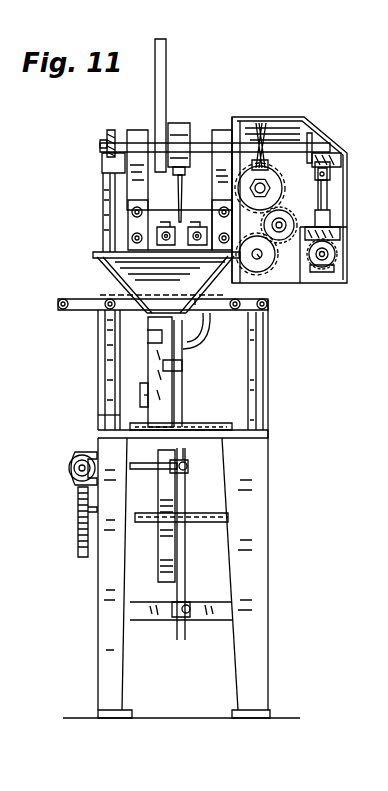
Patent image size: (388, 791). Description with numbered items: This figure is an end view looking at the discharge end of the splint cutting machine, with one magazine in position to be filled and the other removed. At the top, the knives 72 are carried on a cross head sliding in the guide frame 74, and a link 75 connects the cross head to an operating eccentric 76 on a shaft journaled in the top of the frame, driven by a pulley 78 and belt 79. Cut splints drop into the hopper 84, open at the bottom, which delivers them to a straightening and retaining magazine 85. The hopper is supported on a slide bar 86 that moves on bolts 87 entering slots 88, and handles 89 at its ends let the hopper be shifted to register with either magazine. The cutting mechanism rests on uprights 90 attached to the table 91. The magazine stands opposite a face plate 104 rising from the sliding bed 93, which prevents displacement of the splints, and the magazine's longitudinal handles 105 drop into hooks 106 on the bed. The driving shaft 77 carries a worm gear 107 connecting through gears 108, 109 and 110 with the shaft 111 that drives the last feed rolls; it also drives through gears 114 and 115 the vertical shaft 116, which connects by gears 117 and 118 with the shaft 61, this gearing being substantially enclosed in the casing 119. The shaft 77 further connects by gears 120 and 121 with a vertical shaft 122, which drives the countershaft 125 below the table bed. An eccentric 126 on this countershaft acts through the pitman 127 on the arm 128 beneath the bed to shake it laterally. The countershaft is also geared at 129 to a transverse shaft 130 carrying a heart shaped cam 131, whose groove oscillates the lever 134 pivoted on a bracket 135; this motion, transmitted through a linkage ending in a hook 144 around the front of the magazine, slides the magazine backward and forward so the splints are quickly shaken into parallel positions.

The shaft 61 is at (337, 255).
The knives 72 is at (157, 237).
The guide frame 74 is at (240, 148).
The link 75 is at (184, 185).
The operating eccentric 76 is at (183, 122).
The driving shaft 77 is at (200, 140).
The pulley 78 is at (148, 132).
The belt 79 is at (162, 57).
The hopper 84 is at (97, 265).
The straightening and retaining magazine 85 is at (150, 345).
The slide bar 86 is at (268, 312).
The bolts 87 is at (240, 312).
The slots 88 is at (218, 312).
The handles 89 is at (62, 308).
The uprights 90 is at (264, 370).
The table 91 is at (268, 458).
The sliding bed 93 is at (182, 423).
The face plate 104 is at (178, 390).
The handles 105 is at (143, 388).
The hooks 106 is at (141, 398).
The worm gear 107 is at (268, 128).
The gear 108 is at (282, 180).
The gear 109 is at (288, 216).
The gear 110 is at (272, 260).
The shaft 111 is at (262, 262).
The gear 114 is at (312, 138).
The gear 115 is at (332, 155).
The vertical shaft 116 is at (326, 197).
The gear 117 is at (330, 230).
The gear 118 is at (335, 262).
The casing 119 is at (348, 162).
The gear 120 is at (108, 130).
The gear 121 is at (100, 143).
The vertical shaft 122 is at (103, 188).
The countershaft 125 is at (82, 465).
The eccentric 126 is at (70, 470).
The link or pitman 127 is at (150, 470).
The arm 128 is at (188, 450).
The gearing 129 is at (78, 520).
The transverse shaft 130 is at (192, 512).
The heart shaped cam 131 is at (162, 546).
The lever 134 is at (184, 552).
The bracket 135 is at (173, 612).
The hook 144 is at (180, 363).